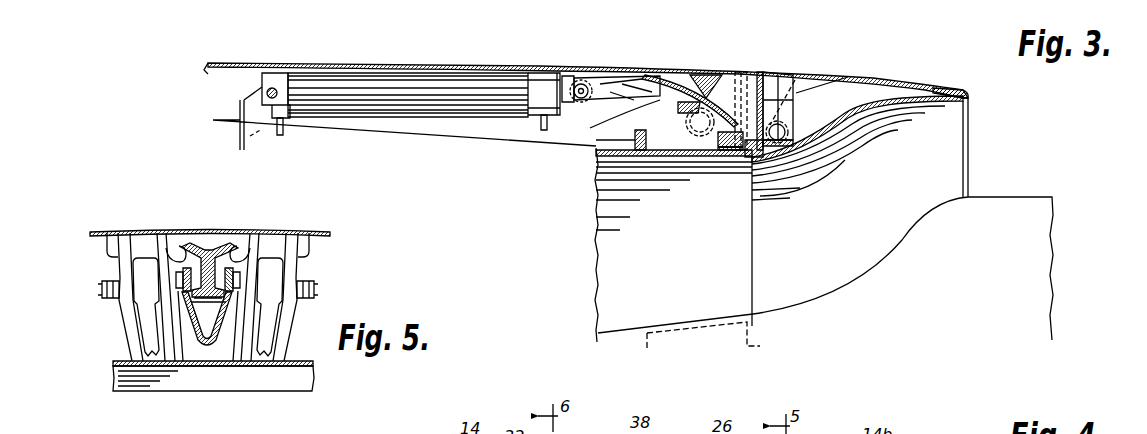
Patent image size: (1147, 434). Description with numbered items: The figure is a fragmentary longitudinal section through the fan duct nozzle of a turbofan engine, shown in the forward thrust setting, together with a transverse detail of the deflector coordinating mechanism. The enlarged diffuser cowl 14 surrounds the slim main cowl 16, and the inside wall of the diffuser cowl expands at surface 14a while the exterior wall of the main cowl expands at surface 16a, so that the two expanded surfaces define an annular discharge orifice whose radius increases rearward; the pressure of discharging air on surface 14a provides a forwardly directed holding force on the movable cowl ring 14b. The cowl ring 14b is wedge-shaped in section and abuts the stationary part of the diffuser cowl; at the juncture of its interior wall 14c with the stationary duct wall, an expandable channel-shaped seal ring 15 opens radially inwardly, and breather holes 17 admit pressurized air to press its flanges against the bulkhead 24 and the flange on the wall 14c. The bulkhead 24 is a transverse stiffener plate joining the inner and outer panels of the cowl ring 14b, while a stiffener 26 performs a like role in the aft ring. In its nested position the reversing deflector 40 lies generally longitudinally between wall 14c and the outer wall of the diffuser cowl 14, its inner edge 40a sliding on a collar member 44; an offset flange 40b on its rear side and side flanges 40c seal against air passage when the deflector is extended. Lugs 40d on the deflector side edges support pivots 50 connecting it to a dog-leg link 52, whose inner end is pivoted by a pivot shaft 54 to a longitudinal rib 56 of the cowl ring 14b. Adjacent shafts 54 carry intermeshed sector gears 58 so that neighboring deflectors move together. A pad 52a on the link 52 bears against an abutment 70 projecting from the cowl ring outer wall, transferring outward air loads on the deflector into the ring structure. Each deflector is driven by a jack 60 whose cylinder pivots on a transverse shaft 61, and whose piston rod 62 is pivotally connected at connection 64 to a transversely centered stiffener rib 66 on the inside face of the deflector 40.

In FIG. 3, the diffuser cowl 14 is at (390, 60).
In FIG. 3, the inner surface of cowl ring 14a is at (792, 158).
In FIG. 5, the inner surface of cowl ring 14a is at (184, 370).
In FIG. 3, the cowl ring 14b is at (899, 82).
In FIG. 5, the cowl ring 14b is at (199, 228).
In FIG. 3, the cowl ring interior wall 14c is at (596, 190).
In FIG. 3, the seal ring 15 is at (778, 162).
In FIG. 3, the main cowl 16 is at (997, 195).
In FIG. 3, the expanded duct surface 16a is at (900, 236).
In FIG. 3, the breather holes 17 is at (760, 166).
In FIG. 3, the bulkhead 24 is at (798, 113).
In FIG. 5, the stiffener 26 is at (215, 246).
In FIG. 3, the reversing deflector 40 is at (650, 78).
In FIG. 3, the inner edge of reversing deflector 40a is at (738, 152).
In FIG. 3, the offset flange 40b is at (706, 80).
In FIG. 3, the side flange 40c is at (684, 114).
In FIG. 3, the lug 40d is at (692, 130).
In FIG. 3, the collar member 44 is at (736, 108).
In FIG. 3, the pivot 50 is at (677, 153).
In FIG. 3, the dog-leg link 52 is at (796, 84).
In FIG. 5, the dog-leg link 52 is at (150, 324).
In FIG. 3, the supporting pad 52a is at (767, 90).
In FIG. 3, the pivot shaft 54 is at (838, 128).
In FIG. 5, the pivot shaft 54 is at (166, 254).
In FIG. 3, the longitudinal rib 56 is at (822, 90).
In FIG. 5, the longitudinal rib 56 is at (118, 246).
In FIG. 5, the sector gear 58 is at (224, 346).
In FIG. 3, the jack 60 is at (440, 100).
In FIG. 3, the shaft 61 is at (275, 87).
In FIG. 3, the piston rod 62 is at (580, 82).
In FIG. 3, the pivotal connection 64 is at (603, 82).
In FIG. 3, the stiffener rib 66 is at (618, 86).
In FIG. 3, the abutment 70 is at (790, 110).